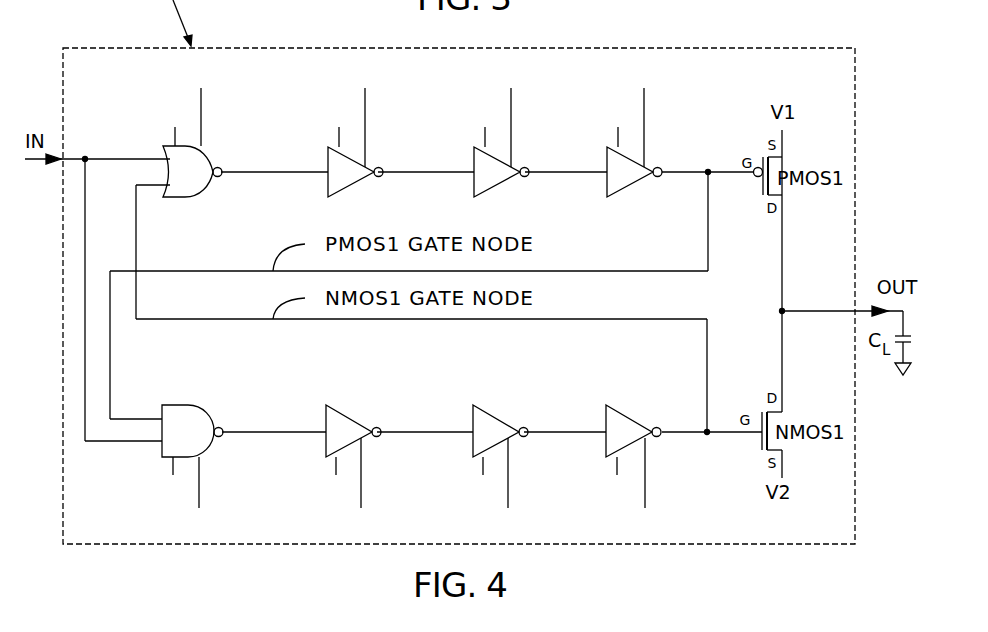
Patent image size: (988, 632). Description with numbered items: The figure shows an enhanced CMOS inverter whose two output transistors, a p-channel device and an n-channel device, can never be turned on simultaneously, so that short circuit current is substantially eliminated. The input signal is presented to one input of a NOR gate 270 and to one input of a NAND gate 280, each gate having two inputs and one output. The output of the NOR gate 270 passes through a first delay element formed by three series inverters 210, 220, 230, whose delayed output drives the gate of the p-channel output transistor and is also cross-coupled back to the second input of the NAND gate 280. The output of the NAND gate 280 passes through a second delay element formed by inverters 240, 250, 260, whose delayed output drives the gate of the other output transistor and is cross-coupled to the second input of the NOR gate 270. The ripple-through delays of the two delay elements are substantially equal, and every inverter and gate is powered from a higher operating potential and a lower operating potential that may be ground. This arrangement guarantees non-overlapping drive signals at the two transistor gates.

The inverter 210 is at (348, 186).
The inverter 220 is at (494, 186).
The inverter 230 is at (627, 186).
The inverter 240 is at (332, 407).
The inverter 250 is at (479, 407).
The inverter 260 is at (612, 407).
The NOR gate 270 is at (183, 197).
The NAND gate 280 is at (172, 405).